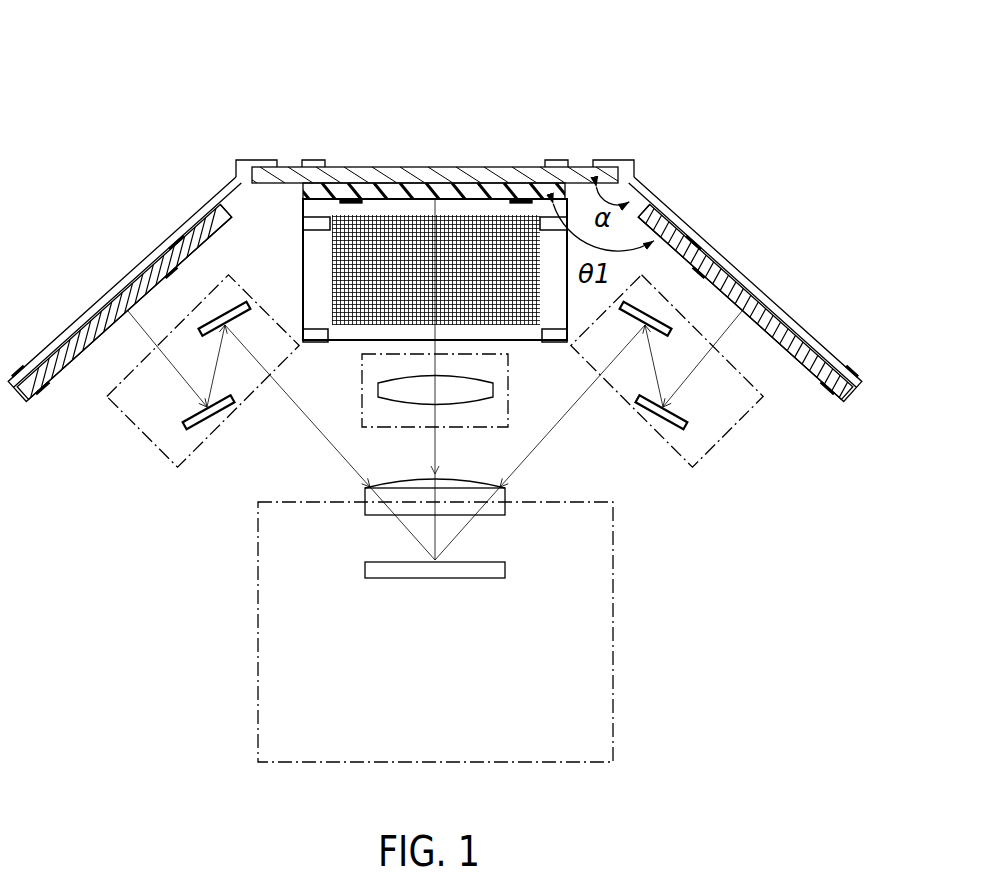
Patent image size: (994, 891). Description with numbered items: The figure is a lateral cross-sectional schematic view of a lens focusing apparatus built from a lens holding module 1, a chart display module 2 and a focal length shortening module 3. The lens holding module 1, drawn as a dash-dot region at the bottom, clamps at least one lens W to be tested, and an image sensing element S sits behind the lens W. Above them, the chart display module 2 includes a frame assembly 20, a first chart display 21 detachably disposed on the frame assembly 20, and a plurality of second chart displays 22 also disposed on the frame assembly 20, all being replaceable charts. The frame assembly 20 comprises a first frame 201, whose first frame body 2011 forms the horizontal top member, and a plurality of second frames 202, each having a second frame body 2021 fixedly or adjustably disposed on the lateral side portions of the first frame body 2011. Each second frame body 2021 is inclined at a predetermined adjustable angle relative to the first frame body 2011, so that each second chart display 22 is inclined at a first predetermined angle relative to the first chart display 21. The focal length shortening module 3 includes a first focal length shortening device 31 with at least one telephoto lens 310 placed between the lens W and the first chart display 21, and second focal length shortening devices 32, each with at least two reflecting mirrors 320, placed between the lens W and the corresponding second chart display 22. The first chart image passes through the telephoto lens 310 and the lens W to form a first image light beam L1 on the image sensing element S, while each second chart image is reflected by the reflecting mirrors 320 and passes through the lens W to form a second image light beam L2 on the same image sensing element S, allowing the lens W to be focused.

The lens holding module 1 is at (616, 645).
The chart display module 2 is at (92, 305).
The focal length shortening module 3 is at (248, 592).
The frame assembly 20 is at (362, 99).
The first chart display 21 is at (425, 190).
The second chart display 22 is at (480, 222).
The first focal length shortening device 31 is at (307, 418).
The second focal length shortening device 32 is at (137, 433).
The first frame 201 is at (345, 178).
The second frame 202 is at (222, 193).
The telephoto lens 310 is at (493, 390).
The reflecting mirror 320 is at (221, 312).
The first frame body 2011 is at (583, 170).
The second frame body 2021 is at (192, 222).
The lens W is at (510, 496).
The image sensing element S is at (510, 576).
The first image light beam L1 is at (442, 522).
The second image light beam L2 is at (404, 530).